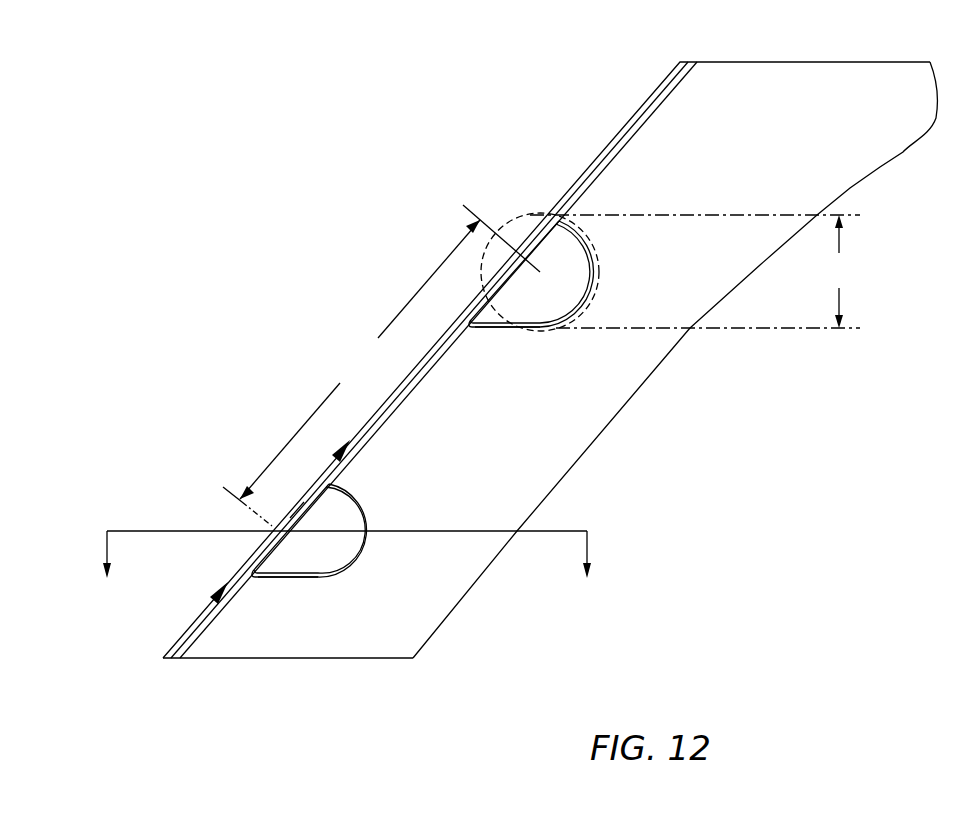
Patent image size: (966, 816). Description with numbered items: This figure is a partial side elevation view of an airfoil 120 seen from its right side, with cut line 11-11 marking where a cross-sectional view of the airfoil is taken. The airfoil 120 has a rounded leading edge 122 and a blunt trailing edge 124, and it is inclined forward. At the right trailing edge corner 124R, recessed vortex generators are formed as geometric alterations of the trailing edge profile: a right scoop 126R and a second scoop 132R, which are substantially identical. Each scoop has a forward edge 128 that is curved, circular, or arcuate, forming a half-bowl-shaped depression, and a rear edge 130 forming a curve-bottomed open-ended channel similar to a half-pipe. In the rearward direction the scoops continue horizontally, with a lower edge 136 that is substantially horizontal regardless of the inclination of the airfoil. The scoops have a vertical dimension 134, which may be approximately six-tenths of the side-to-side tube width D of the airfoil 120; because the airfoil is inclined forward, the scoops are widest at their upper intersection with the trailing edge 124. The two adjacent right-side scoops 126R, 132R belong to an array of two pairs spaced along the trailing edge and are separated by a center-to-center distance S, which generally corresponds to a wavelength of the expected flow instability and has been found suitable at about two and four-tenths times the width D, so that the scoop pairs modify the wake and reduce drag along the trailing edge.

The trailing edge 124 is at (498, 97).
The right trailing edge corner 124R is at (660, 133).
The airfoil 120 is at (621, 382).
The leading edge 122 is at (620, 438).
The second scoop 132R is at (581, 288).
The forward edge 128 is at (357, 539).
The right scoop 126R is at (335, 553).
The lower edge 136 is at (487, 332).
The rear edge 130 is at (297, 508).
The vertical dimension 134 is at (843, 242).
The cut line 11- 11 is at (352, 572).
The separation distance S is at (307, 418).